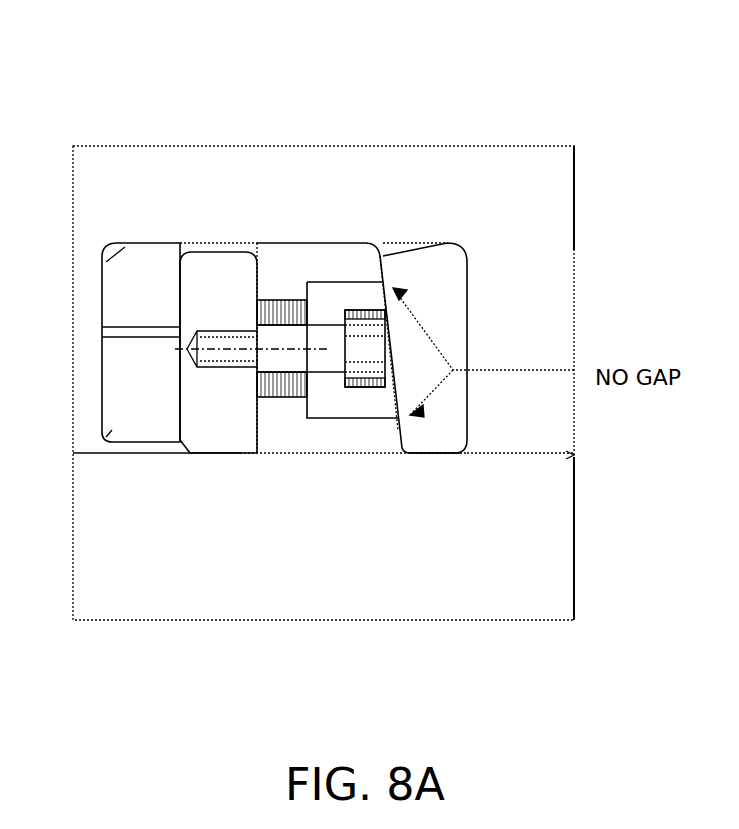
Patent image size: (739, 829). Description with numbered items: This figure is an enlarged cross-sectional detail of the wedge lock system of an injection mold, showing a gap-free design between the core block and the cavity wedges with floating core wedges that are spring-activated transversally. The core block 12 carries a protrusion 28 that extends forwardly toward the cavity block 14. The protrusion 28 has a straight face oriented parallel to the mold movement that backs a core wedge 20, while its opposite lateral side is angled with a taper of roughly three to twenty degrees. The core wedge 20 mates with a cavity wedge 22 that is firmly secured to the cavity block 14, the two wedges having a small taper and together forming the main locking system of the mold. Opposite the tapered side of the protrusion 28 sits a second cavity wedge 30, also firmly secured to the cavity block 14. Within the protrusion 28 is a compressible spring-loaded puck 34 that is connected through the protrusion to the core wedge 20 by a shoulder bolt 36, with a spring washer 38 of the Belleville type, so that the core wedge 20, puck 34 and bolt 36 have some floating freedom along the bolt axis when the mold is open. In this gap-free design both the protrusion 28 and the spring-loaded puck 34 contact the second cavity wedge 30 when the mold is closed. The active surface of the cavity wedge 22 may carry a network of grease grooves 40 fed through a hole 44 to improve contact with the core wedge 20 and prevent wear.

The core block 12 is at (502, 547).
The cavity block 14 is at (532, 218).
The core wedge 20 is at (217, 425).
The cavity wedge 22 is at (135, 413).
The protrusion 28 is at (287, 272).
The second cavity wedge 30 is at (440, 300).
The spring-loaded puck 34 is at (333, 298).
The shoulder bolt 36 is at (363, 375).
The spring washer 38 is at (282, 385).
The grease groove 40 is at (178, 270).
The hole 44 is at (120, 328).